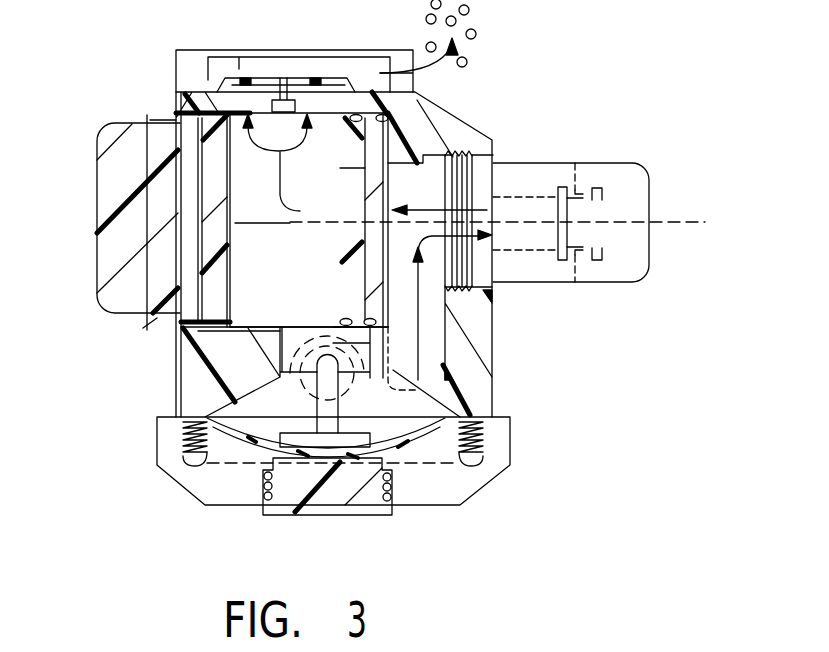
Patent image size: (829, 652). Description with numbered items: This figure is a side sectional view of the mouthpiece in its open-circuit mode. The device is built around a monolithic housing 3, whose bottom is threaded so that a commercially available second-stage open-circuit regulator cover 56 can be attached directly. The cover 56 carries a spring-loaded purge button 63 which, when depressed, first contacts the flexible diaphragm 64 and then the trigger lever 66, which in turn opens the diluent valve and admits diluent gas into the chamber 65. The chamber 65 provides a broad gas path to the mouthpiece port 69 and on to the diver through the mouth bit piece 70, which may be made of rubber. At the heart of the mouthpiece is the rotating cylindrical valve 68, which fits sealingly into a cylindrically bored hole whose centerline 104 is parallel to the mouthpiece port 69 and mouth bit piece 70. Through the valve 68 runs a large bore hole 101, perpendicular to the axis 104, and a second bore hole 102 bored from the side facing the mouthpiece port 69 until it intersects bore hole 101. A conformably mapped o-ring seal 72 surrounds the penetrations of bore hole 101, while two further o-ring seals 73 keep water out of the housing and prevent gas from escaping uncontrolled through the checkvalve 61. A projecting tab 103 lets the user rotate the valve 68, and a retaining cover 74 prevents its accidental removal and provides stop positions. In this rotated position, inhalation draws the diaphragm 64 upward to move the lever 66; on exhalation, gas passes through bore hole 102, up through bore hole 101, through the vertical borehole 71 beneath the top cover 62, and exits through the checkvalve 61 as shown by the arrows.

The housing 3 is at (253, 368).
The second-stage open-circuit regulator cover 56 is at (470, 478).
The checkvalve 61 is at (270, 78).
The top cover 62 is at (385, 55).
The purge button 63 is at (336, 495).
The flexible diaphragm 64 is at (262, 440).
The chamber 65 is at (420, 320).
The trigger lever 66 is at (327, 422).
The rotating cylindrical valve 68 is at (212, 214).
The mouthpiece port 69 is at (486, 190).
The mouth bit piece 70 is at (646, 255).
The vertical borehole 71 is at (324, 100).
The o-ring seal 72 is at (222, 319).
The o-ring seals 73 is at (183, 108).
The retaining cover 74 is at (160, 323).
The bore hole 101 is at (292, 257).
The bore hole 102 is at (348, 183).
The projecting tab 103 is at (108, 215).
The centerline 104 is at (653, 225).